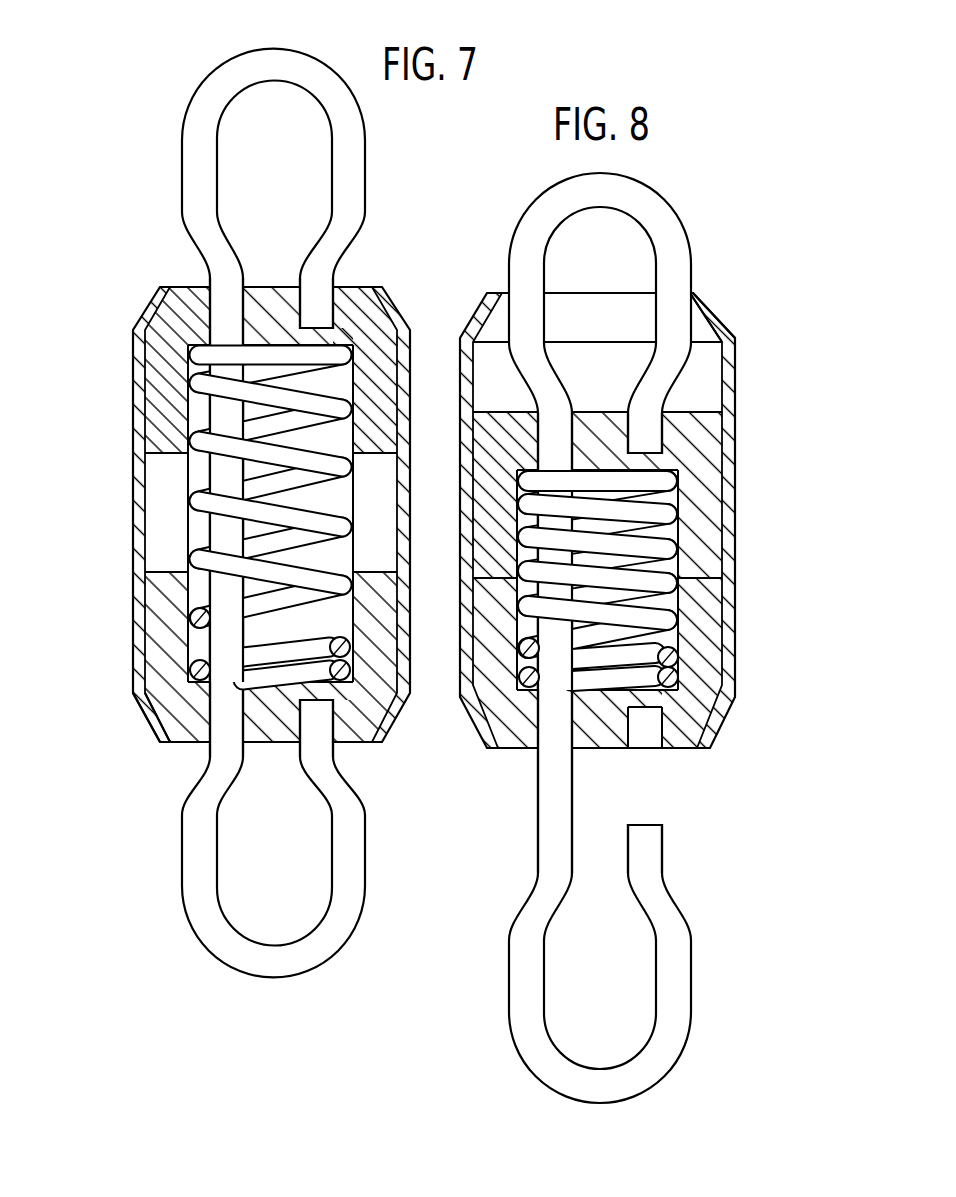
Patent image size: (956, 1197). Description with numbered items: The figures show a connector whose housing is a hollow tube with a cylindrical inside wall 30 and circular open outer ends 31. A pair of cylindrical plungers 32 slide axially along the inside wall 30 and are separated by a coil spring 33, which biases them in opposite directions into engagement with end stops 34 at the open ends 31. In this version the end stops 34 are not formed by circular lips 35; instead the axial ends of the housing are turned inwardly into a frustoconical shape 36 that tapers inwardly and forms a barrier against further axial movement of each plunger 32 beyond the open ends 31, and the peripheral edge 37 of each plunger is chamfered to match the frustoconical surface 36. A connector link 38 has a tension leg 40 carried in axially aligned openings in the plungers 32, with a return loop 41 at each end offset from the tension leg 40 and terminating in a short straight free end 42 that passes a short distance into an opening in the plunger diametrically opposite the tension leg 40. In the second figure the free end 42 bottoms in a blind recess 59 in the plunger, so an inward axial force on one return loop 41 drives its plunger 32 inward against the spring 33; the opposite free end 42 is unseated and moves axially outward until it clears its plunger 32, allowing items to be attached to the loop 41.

In FIG. 7, the cylindrical inside wall 30 is at (155, 510).
In FIG. 8, the cylindrical inside wall 30 is at (712, 395).
In FIG. 8, the open outer ends 31 is at (575, 312).
In FIG. 7, the cylindrical plunger 32 is at (160, 666).
In FIG. 8, the cylindrical plunger 32 is at (588, 448).
In FIG. 7, the coil spring 33 is at (200, 496).
In FIG. 8, the coil spring 33 is at (665, 555).
In FIG. 7, the end stop 34 is at (148, 712).
In FIG. 8, the end stop 34 is at (712, 307).
In FIG. 7, the circular lip 35 is at (165, 742).
In FIG. 8, the circular lip 35 is at (712, 298).
In FIG. 7, the frustoconical shape 36 is at (150, 300).
In FIG. 8, the frustoconical shape 36 is at (517, 748).
In FIG. 7, the peripheral edge 37 is at (165, 290).
In FIG. 8, the peripheral edge 37 is at (493, 425).
In FIG. 7, the connector link 38 is at (220, 415).
In FIG. 8, the connector link 38 is at (562, 790).
In FIG. 7, the tension leg 40 is at (225, 474).
In FIG. 7, the return loop 41 is at (225, 90).
In FIG. 8, the return loop 41 is at (652, 215).
In FIG. 7, the free end 42 is at (325, 735).
In FIG. 8, the free end 42 is at (650, 432).
In FIG. 7, the blind recess 59 is at (327, 325).
In FIG. 8, the blind recess 59 is at (642, 750).